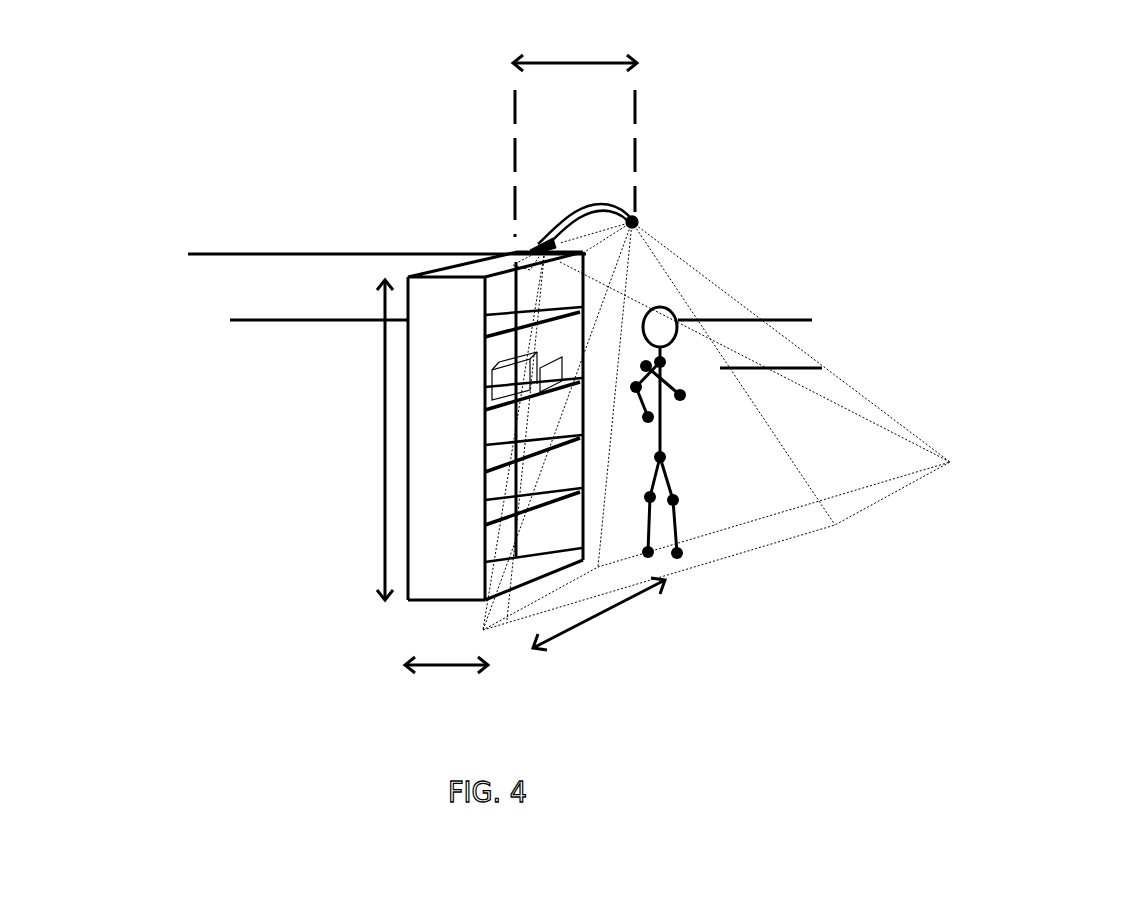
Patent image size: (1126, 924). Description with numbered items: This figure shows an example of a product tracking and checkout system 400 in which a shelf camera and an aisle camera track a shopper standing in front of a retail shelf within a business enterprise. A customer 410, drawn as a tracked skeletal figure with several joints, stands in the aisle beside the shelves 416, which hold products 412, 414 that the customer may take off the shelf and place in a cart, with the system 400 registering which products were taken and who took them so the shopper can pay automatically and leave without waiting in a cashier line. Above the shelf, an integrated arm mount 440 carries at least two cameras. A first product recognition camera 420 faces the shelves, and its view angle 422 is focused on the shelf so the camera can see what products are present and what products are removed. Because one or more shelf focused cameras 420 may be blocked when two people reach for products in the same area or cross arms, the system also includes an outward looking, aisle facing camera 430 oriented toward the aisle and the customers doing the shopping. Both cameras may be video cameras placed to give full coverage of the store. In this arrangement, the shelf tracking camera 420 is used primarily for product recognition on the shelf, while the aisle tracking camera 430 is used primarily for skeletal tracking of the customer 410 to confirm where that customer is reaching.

The product tracking and checkout system 400 is at (437, 29).
The customer 410 is at (667, 430).
The product 412 is at (497, 375).
The product 414 is at (550, 372).
The shelf 416 is at (493, 405).
The product recognition camera 420 is at (640, 222).
The view angle 422 is at (633, 260).
The aisle facing camera 430 is at (543, 240).
The integrated arm mount 440 is at (736, 202).